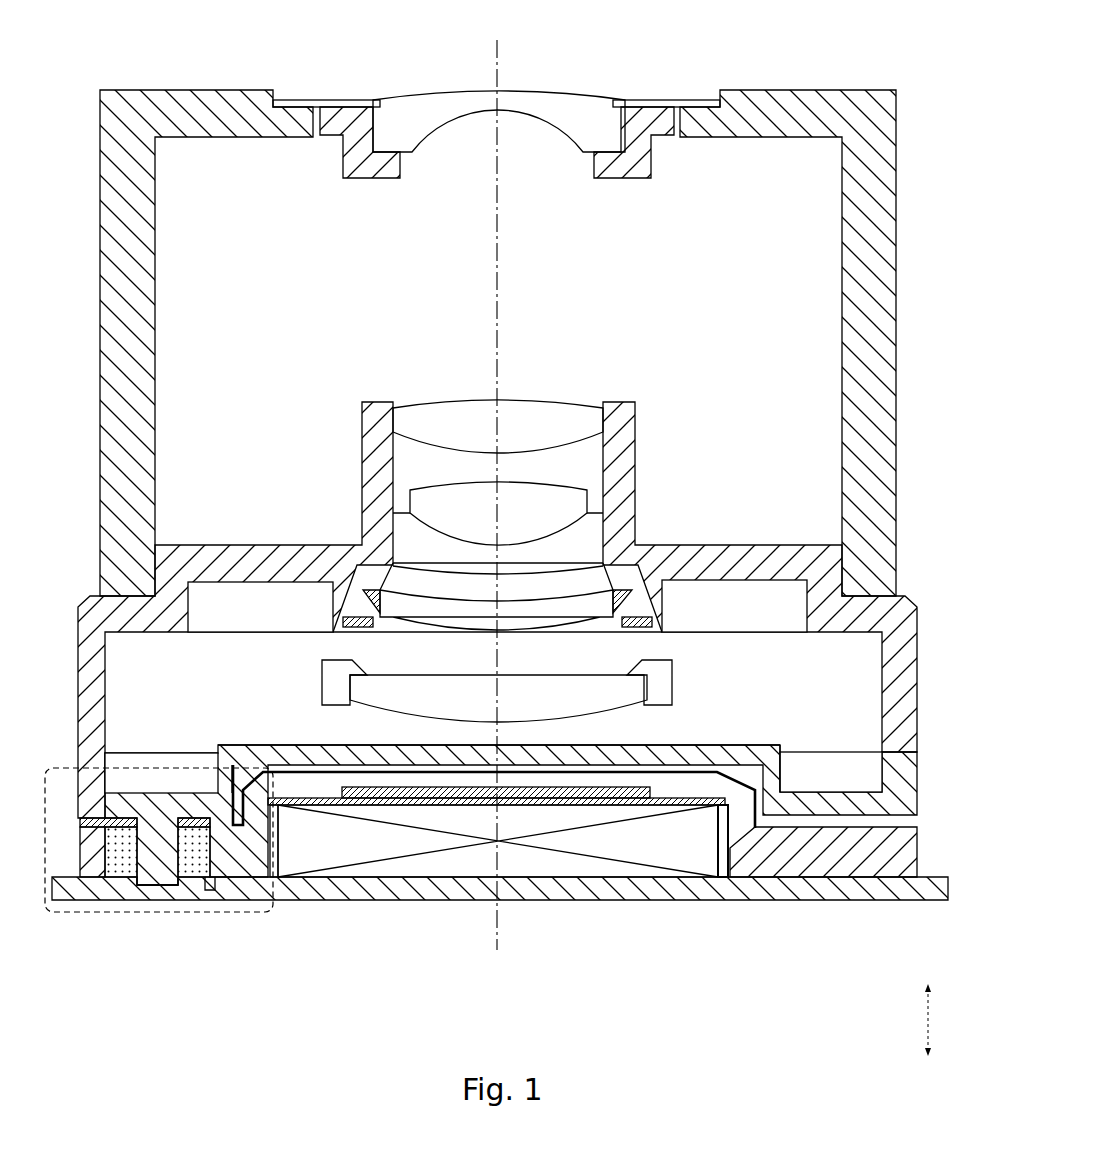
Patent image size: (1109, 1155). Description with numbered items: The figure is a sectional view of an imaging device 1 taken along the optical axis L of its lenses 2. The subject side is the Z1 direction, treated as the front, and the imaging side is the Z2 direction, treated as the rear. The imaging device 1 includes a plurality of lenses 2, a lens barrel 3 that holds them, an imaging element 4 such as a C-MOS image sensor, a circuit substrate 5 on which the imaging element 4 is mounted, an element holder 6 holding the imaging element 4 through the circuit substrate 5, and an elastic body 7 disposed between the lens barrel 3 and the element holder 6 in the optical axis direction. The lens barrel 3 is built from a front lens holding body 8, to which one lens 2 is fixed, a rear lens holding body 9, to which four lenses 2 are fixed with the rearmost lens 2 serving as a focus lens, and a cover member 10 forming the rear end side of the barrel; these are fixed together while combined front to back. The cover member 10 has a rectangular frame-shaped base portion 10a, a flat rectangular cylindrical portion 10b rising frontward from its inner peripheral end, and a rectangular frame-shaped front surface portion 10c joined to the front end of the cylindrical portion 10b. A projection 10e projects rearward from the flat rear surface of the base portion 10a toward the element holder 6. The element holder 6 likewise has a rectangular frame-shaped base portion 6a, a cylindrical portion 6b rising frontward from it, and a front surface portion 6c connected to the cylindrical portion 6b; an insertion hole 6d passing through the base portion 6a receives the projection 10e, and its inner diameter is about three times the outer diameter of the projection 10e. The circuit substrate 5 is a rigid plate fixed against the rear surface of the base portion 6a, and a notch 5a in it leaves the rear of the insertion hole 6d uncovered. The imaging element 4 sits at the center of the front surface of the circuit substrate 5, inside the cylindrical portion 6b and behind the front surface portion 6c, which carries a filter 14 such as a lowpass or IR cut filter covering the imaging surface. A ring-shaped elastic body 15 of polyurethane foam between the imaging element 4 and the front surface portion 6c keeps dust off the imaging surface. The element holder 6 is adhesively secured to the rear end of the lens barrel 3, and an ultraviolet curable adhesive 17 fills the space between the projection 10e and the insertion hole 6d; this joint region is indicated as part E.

The imaging device 1 is at (900, 48).
The optical axis L is at (503, 50).
The lens 2 is at (447, 122).
The lens barrel 3 is at (897, 415).
The lens holding body 8 is at (532, 343).
The lens holding body 9 is at (919, 668).
The cover member 10 is at (535, 845).
The base portion 10a is at (852, 790).
The cylindrical portion 10b is at (780, 778).
The front surface portion 10c is at (700, 745).
The projection 10e is at (157, 886).
The filter 14 is at (400, 787).
The elastic body 15 is at (300, 797).
The imaging element 4 is at (608, 880).
The circuit substrate 5 is at (500, 935).
The notch 5a is at (207, 892).
The element holder 6 is at (563, 814).
The base portion 6a is at (563, 814).
The cylindrical portion 6b is at (720, 816).
The front surface portion 6c is at (712, 772).
The insertion hole 6d is at (210, 843).
The elastic body 7 is at (195, 880).
The adhesive 17 is at (120, 878).
The part E is at (272, 915).
The Z1 direction Z1 is at (929, 1003).
The Z2 direction Z2 is at (929, 1061).